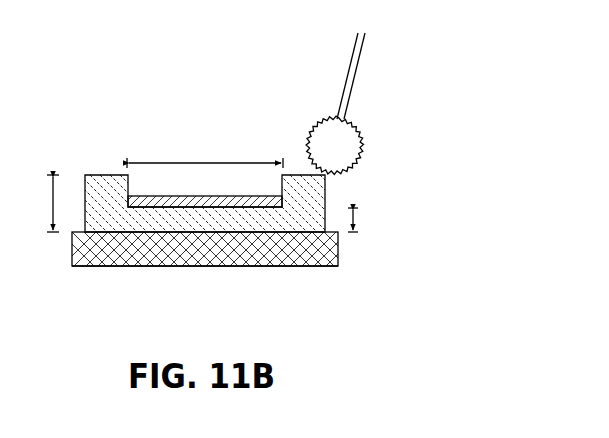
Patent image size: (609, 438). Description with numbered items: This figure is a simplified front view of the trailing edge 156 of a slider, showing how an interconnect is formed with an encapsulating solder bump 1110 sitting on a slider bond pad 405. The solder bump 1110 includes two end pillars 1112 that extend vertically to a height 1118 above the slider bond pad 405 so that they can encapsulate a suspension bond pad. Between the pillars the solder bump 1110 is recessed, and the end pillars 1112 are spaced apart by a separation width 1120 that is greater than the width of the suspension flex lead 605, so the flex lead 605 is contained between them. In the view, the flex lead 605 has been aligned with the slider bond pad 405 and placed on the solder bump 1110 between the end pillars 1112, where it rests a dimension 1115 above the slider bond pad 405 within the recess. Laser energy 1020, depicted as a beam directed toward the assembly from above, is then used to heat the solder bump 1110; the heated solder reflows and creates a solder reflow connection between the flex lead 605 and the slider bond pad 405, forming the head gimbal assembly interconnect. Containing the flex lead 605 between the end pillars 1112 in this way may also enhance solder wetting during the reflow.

The solder bump 1110 is at (99, 69).
The end pillars 1112 is at (88, 167).
The flex lead 605 is at (243, 202).
The slider bond pad 405 is at (315, 258).
The trailing edge 156 is at (217, 313).
The height 1118 is at (33, 203).
The separation width 1120 is at (205, 156).
The recess depth 1115 is at (374, 220).
The laser energy 1020 is at (372, 79).